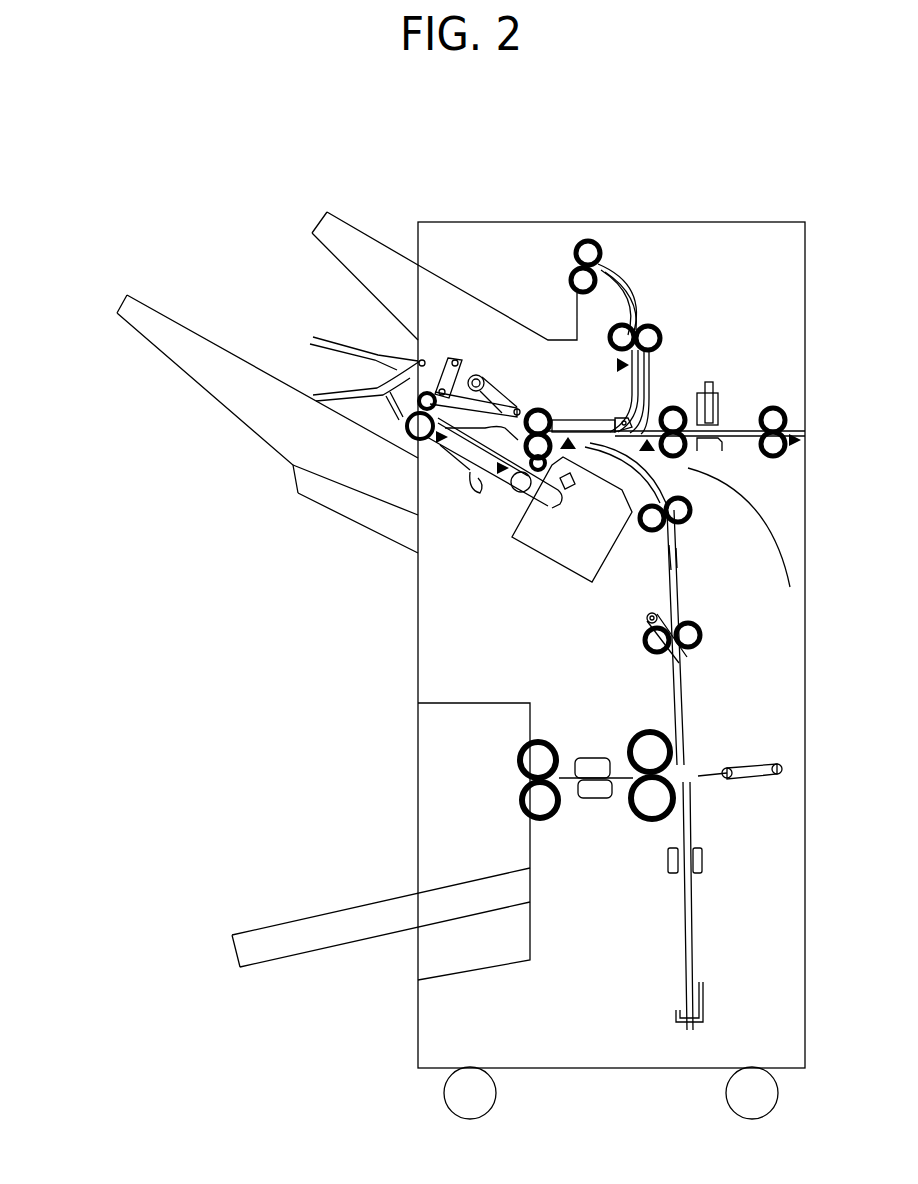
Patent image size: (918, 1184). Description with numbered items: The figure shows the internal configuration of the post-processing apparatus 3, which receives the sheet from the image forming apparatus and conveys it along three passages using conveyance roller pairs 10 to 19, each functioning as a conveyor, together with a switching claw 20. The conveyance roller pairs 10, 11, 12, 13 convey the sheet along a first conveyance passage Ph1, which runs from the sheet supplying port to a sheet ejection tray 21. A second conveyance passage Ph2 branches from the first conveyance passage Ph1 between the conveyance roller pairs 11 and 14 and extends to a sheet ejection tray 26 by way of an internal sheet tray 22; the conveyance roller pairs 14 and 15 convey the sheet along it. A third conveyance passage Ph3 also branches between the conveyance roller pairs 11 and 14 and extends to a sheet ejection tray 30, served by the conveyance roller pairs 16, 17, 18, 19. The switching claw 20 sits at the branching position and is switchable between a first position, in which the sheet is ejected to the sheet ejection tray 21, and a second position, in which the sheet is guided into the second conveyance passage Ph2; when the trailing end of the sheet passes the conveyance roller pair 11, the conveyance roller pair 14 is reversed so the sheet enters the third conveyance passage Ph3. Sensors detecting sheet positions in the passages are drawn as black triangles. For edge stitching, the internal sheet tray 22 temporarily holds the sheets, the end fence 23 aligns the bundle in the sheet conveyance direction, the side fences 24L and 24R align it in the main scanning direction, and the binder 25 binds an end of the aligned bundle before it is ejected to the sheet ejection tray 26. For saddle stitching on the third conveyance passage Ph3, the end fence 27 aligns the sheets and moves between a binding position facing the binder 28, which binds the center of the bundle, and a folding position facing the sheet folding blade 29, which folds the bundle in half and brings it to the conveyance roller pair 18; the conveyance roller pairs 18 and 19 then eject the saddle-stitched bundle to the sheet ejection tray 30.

The post-processing apparatus 3 is at (690, 142).
The conveyance roller pair 10 is at (775, 406).
The conveyance roller pair 11 is at (672, 406).
The conveyance roller pair 12 is at (663, 334).
The conveyance roller pair 13 is at (603, 252).
The conveyance roller pair 14 is at (540, 408).
The conveyance roller pair 15 is at (415, 447).
The conveyance roller pair 16 is at (693, 507).
The conveyance roller pair 17 is at (703, 640).
The conveyance roller pair 18 is at (648, 823).
The conveyance roller pair 19 is at (543, 735).
The switching claw 20 is at (620, 410).
The sheet ejection tray 21 is at (360, 228).
The internal sheet tray 22 is at (460, 437).
The end fence 23 is at (552, 495).
The side fence 24L is at (490, 450).
The side fence 24R is at (492, 538).
The binder 25 is at (596, 540).
The sheet ejection tray 26 is at (205, 332).
The end fence 27 is at (703, 993).
The binder 28 is at (703, 858).
The sheet folding blade 29 is at (750, 762).
The sheet ejection tray 30 is at (317, 913).
The first conveyance passage Ph1 is at (634, 292).
The second conveyance passage Ph2 is at (592, 430).
The third conveyance passage Ph3 is at (676, 572).